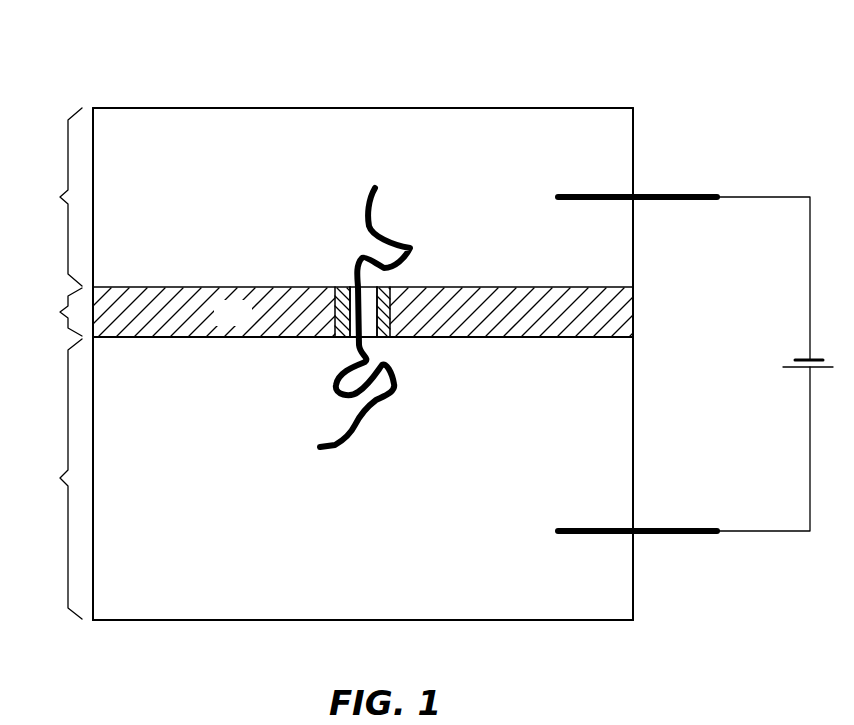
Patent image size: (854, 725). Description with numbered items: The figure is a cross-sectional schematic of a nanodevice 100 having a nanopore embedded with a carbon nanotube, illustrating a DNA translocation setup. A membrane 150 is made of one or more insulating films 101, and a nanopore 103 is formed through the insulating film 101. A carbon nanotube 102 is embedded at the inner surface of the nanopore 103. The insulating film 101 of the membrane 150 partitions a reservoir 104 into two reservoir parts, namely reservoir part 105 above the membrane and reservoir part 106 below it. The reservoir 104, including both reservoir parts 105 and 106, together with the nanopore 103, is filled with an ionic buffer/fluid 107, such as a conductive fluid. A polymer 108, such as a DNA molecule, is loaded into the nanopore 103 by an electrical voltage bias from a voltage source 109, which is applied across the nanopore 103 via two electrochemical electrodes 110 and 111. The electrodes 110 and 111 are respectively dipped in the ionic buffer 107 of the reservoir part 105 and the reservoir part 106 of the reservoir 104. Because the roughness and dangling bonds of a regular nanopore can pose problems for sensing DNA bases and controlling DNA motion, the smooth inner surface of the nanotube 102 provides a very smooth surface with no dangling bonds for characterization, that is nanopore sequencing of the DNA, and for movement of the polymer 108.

The nanodevice 100 is at (194, 77).
The insulating film 101 is at (246, 323).
The carbon nanotube 102 is at (342, 287).
The nanopore 103 is at (371, 285).
The reservoir 104 is at (637, 585).
The reservoir part 105 is at (49, 197).
The reservoir part 106 is at (49, 479).
The ionic buffer/fluid 107 is at (188, 593).
The polymer 108 is at (367, 207).
The voltage source 109 is at (793, 372).
The electrochemical electrode 110 is at (684, 194).
The electrochemical electrode 111 is at (684, 528).
The membrane 150 is at (49, 312).